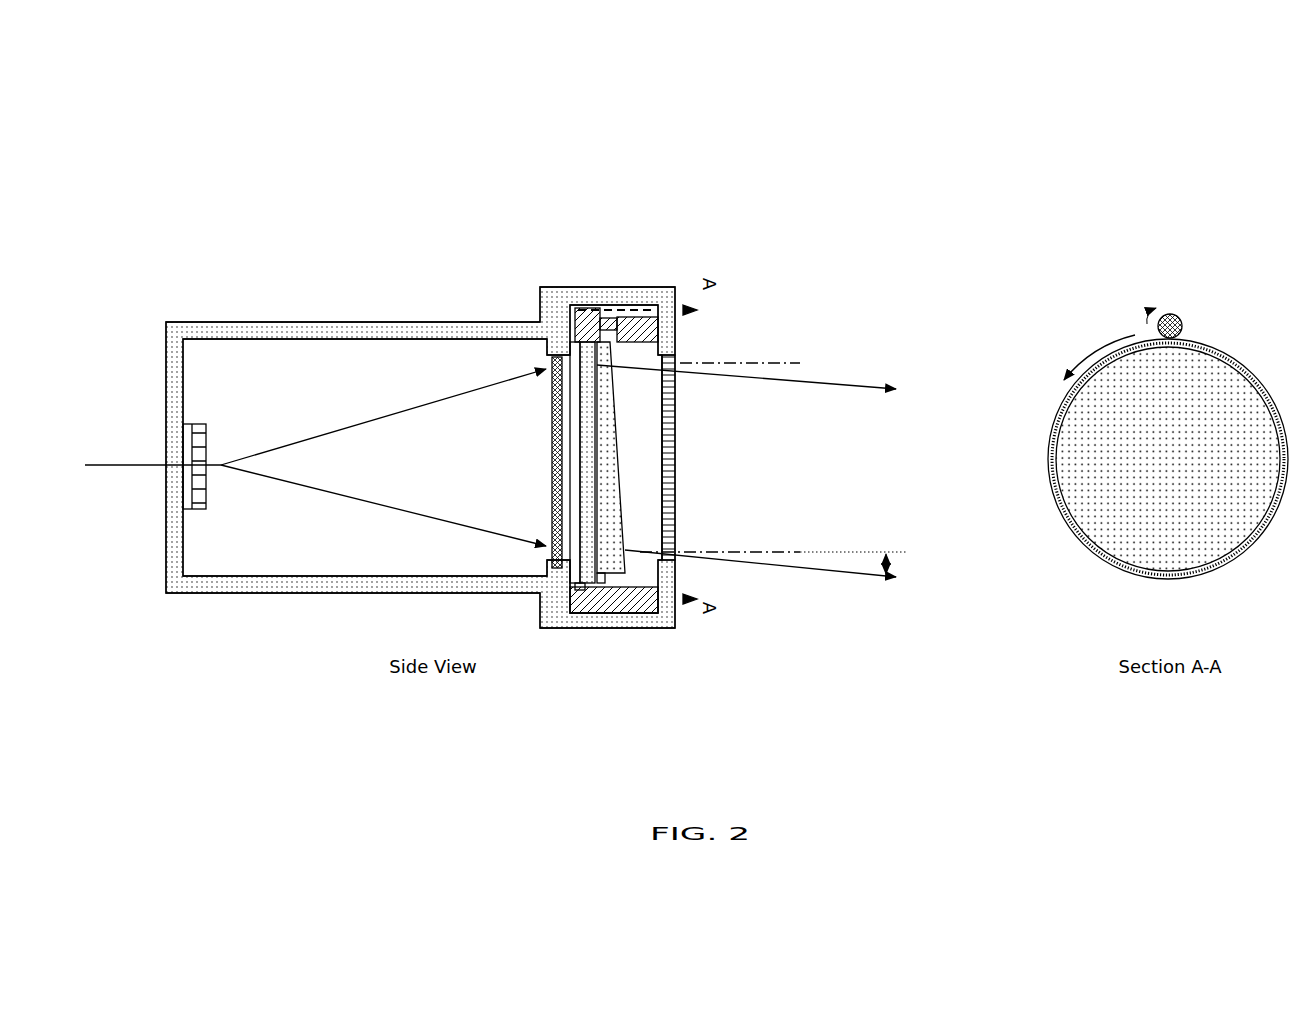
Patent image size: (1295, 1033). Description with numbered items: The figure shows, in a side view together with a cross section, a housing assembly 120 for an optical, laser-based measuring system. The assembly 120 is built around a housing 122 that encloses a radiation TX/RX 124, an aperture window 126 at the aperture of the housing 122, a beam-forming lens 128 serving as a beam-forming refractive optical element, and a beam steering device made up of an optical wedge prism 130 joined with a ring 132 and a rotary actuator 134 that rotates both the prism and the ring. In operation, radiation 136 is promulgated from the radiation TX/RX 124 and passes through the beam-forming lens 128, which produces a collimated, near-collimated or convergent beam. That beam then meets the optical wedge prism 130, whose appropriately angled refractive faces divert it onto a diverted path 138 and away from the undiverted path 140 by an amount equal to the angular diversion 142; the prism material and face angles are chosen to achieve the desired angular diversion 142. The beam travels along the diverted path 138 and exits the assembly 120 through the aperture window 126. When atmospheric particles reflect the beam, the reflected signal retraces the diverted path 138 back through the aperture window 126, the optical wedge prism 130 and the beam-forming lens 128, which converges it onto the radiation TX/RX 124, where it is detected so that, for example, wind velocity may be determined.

The housing assembly 120 is at (242, 138).
The housing 122 is at (248, 318).
The radiation TX/RX 124 is at (222, 440).
The aperture window 126 is at (682, 420).
The beam-forming lens 128 is at (1186, 469).
The optical wedge prism 130 is at (630, 484).
The ring 132 is at (608, 517).
The rotary actuator 134 is at (1168, 306).
The radiation 136 is at (450, 384).
The diverted path 138 is at (874, 370).
The undiverted path 140 is at (757, 350).
The angular diversion 142 is at (833, 594).